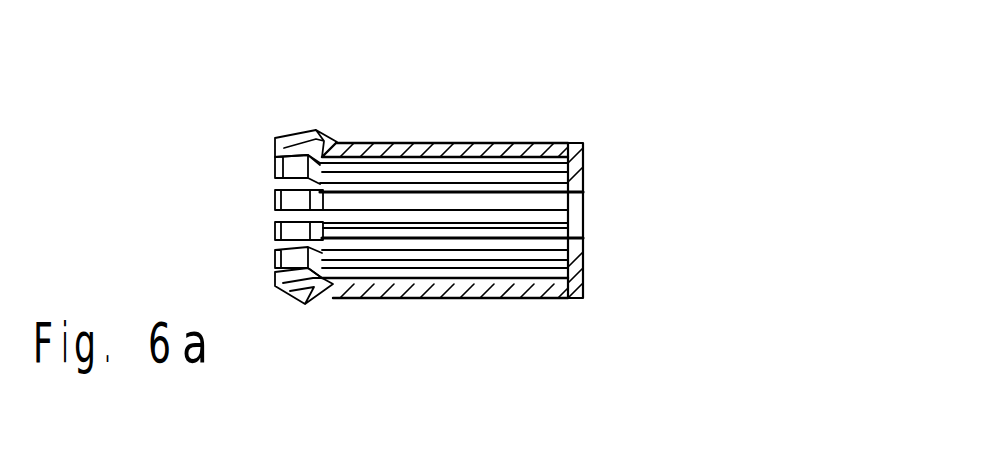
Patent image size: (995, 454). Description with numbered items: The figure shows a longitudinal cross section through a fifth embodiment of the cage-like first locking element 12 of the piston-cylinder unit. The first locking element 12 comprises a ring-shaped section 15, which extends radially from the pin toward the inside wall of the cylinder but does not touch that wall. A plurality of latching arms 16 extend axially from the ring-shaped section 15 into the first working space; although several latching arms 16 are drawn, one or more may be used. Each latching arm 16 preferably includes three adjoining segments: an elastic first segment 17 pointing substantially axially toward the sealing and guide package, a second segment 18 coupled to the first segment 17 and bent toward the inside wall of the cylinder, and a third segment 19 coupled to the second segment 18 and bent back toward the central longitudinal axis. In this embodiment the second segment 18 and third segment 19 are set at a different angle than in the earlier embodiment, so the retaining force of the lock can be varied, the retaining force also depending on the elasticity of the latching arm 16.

The first locking element 12 is at (438, 198).
The ring-shaped section 15 is at (584, 169).
The latching arm 16 is at (452, 300).
The first segment 17 is at (409, 143).
The second segment 18 is at (324, 140).
The third segment 19 is at (290, 137).